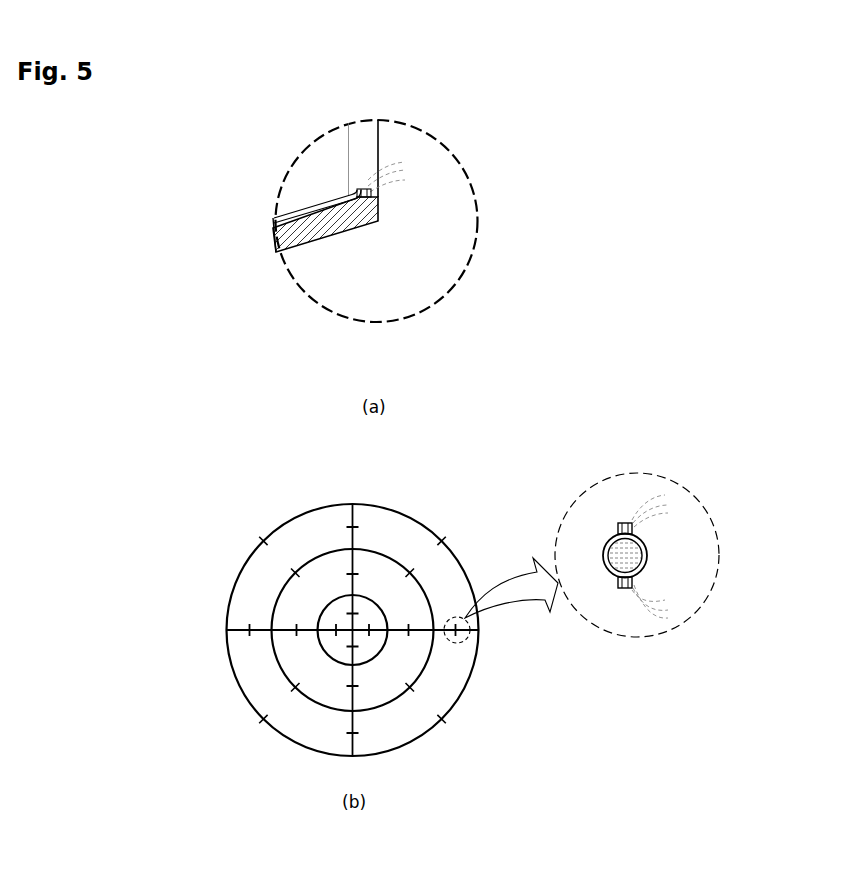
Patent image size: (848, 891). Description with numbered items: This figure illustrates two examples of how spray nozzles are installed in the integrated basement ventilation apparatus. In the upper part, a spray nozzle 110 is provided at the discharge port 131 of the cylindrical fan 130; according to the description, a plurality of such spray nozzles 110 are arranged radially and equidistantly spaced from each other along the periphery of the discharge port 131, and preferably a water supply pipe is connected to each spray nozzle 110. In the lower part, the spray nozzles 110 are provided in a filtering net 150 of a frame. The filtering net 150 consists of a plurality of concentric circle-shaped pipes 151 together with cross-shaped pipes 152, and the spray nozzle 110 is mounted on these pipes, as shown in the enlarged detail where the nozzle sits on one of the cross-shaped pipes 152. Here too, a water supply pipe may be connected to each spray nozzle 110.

The spray nozzle 110 is at (348, 193).
The cylindrical fan 130 is at (318, 258).
The discharge port 131 is at (367, 148).
The filtering net 150 is at (205, 668).
The concentric circle-shaped pipes 151 is at (323, 553).
The cross-shaped pipes 152 is at (398, 632).